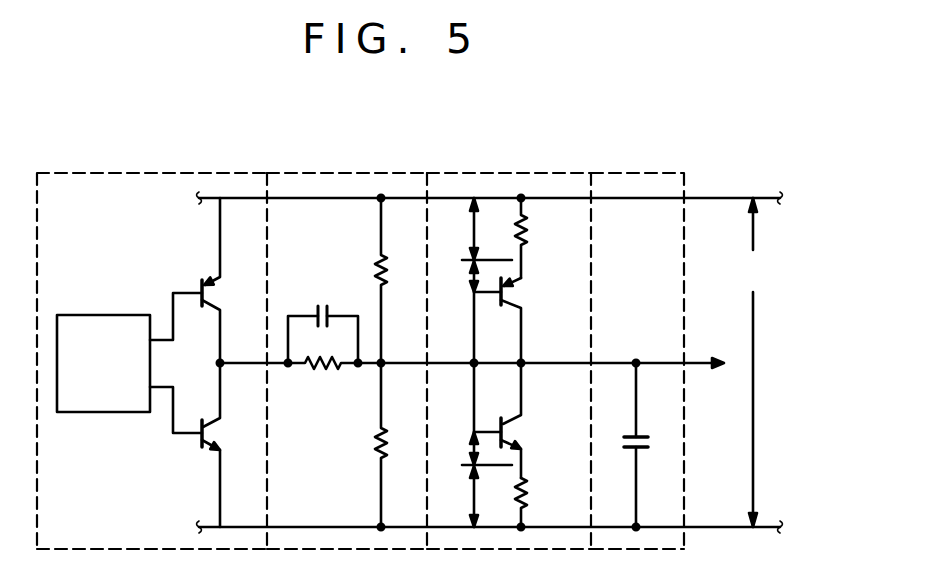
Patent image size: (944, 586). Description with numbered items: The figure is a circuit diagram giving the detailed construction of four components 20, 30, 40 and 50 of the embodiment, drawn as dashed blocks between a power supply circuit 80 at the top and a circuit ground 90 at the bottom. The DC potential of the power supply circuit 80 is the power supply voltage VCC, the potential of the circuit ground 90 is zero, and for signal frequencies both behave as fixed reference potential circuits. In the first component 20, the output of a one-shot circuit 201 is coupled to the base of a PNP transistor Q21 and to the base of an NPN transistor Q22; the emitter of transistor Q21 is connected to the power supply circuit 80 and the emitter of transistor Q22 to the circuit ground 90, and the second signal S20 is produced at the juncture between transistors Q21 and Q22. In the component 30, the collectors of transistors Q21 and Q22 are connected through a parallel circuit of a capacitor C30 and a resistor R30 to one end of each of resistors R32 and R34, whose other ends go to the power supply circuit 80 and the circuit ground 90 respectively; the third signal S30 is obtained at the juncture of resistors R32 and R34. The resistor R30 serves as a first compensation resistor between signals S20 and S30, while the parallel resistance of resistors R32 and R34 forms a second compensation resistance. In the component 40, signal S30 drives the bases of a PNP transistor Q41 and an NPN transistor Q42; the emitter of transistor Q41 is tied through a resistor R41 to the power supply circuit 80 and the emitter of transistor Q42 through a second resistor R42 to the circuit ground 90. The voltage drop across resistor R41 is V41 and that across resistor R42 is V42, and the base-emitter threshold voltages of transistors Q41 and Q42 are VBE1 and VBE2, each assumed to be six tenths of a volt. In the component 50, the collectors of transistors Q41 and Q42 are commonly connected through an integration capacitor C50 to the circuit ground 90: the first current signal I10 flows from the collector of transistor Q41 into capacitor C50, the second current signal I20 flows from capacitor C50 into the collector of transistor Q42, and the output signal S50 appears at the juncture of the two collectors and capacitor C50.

The component 20 is at (160, 180).
The one-shot circuit 201 is at (88, 322).
The component 30 is at (334, 179).
The component 40 is at (494, 179).
The component 50 is at (637, 180).
The power supply circuit 80 is at (712, 197).
The circuit ground 90 is at (726, 528).
The PNP transistor Q21 is at (213, 274).
The NPN transistor Q22 is at (213, 450).
The second signal S20 is at (220, 363).
The capacitor C30 is at (308, 306).
The resistor R30 is at (326, 372).
The resistor R32 is at (374, 274).
The resistor R34 is at (374, 442).
The third signal S30 is at (382, 360).
The voltage drop across resistor R41 V41 is at (487, 229).
The base-emitter threshold voltage of transistor Q41 VBE1 is at (469, 280).
The resistor R41 is at (526, 234).
The PNP transistor Q41 is at (522, 293).
The first current signal I10 is at (553, 355).
The second current signal I20 is at (547, 369).
The NPN transistor Q42 is at (523, 436).
The base-emitter threshold voltage of transistor Q42 VBE2 is at (467, 453).
The voltage drop across resistor R42 V42 is at (473, 496).
The second resistor R42 is at (525, 495).
The integration capacitor C50 is at (649, 442).
The output signal S50 is at (610, 362).
The power supply voltage VCC is at (753, 362).